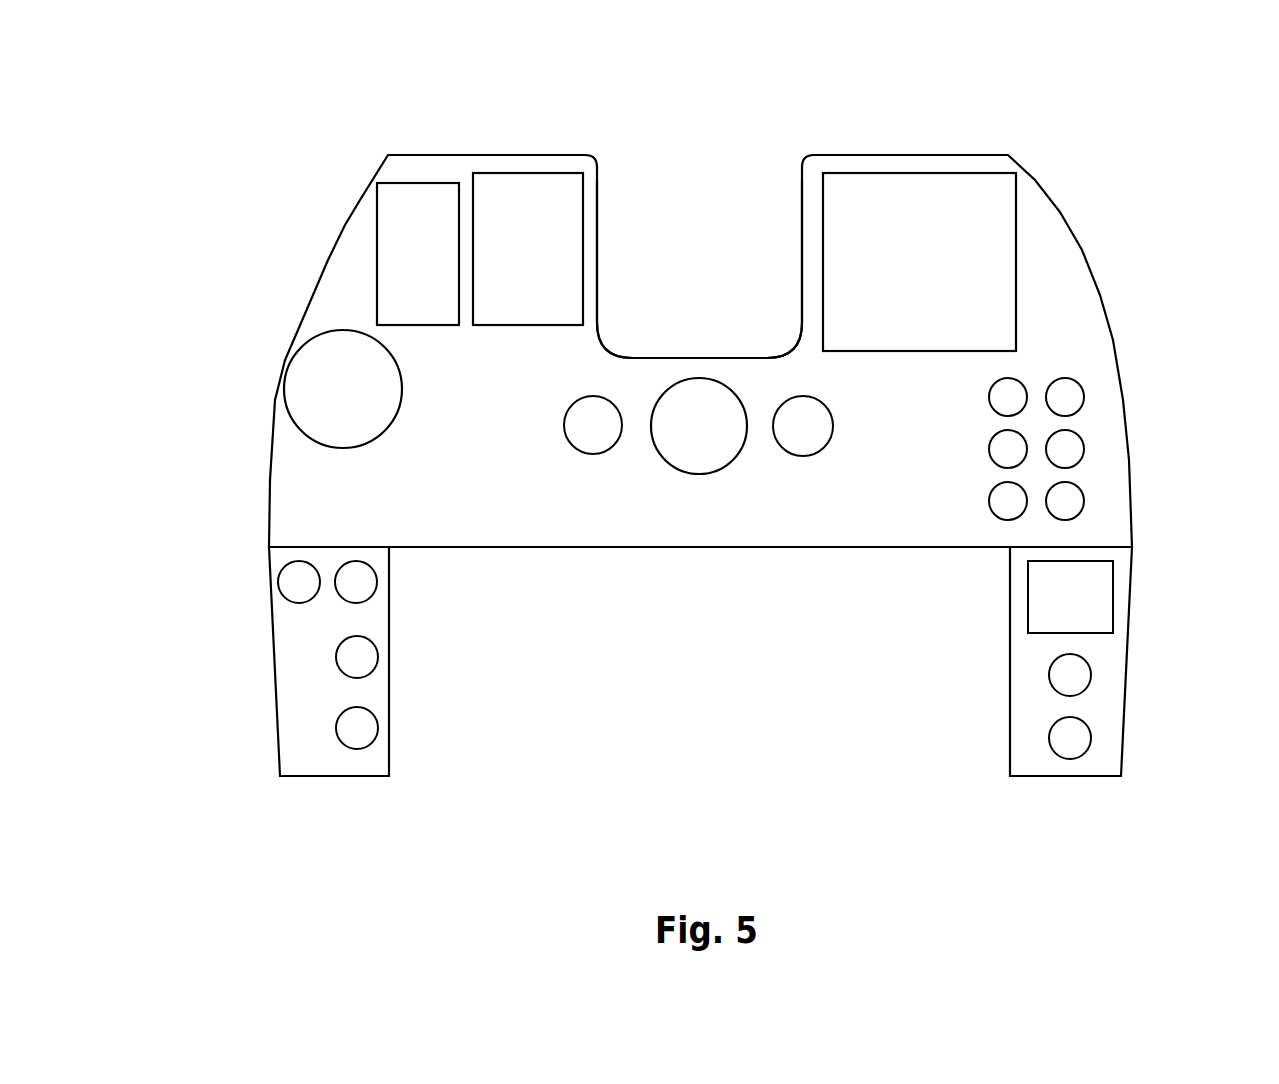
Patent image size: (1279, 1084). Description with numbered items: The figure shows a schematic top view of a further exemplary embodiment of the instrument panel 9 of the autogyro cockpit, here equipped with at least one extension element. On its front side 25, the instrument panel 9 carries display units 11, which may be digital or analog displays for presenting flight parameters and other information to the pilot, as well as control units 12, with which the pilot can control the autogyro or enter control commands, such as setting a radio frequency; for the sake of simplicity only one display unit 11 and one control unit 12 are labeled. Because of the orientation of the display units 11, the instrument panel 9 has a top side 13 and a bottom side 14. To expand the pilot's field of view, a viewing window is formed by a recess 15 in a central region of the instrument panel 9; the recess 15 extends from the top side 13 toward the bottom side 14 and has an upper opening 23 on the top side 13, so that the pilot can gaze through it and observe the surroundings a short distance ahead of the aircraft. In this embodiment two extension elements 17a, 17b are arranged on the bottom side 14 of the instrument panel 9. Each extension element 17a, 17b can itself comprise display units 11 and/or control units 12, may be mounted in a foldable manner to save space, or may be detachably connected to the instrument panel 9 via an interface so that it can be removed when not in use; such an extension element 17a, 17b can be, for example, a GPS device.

The instrument panel 9 is at (250, 200).
The display unit 11 is at (973, 218).
The control unit 12 is at (1068, 398).
The top side 13 is at (448, 153).
The bottom side 14 is at (543, 547).
The recess 15 is at (712, 255).
The extension element 17a is at (307, 697).
The extension element 17b is at (1032, 703).
The upper opening 23 is at (685, 172).
The front side 25 is at (740, 512).